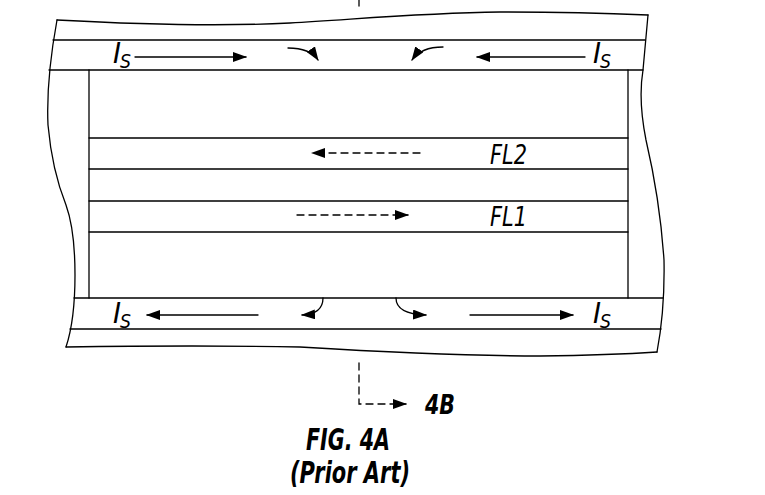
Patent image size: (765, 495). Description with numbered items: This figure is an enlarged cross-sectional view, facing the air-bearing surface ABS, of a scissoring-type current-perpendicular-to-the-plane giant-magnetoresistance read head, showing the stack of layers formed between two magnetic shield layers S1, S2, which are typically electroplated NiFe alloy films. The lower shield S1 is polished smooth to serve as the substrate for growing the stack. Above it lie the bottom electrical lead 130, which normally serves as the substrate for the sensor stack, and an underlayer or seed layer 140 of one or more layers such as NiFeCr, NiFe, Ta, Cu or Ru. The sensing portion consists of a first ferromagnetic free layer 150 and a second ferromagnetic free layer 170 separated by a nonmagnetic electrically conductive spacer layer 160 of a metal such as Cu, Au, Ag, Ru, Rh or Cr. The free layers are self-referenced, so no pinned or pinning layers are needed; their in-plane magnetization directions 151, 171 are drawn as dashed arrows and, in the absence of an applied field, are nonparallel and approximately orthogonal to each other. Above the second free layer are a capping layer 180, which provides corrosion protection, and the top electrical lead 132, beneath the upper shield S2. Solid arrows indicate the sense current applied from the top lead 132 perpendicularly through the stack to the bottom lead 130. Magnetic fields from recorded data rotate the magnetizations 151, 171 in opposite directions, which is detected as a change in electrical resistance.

The upper magnetic shield layer S2 is at (647, 23).
The top electrical lead 132 is at (632, 60).
The capping layer 180 is at (622, 115).
The second ferromagnetic free layer 170 is at (622, 153).
The nonmagnetic spacer layer 160 is at (622, 186).
The first ferromagnetic free layer 150 is at (622, 215).
The seed layer 140 is at (622, 250).
The air-bearing surface ABS is at (655, 279).
The bottom electrical lead 130 is at (655, 312).
The lower magnetic shield layer S1 is at (647, 342).
The magnetization direction of second free layer 171 is at (330, 153).
The magnetization direction of first free layer 151 is at (328, 215).